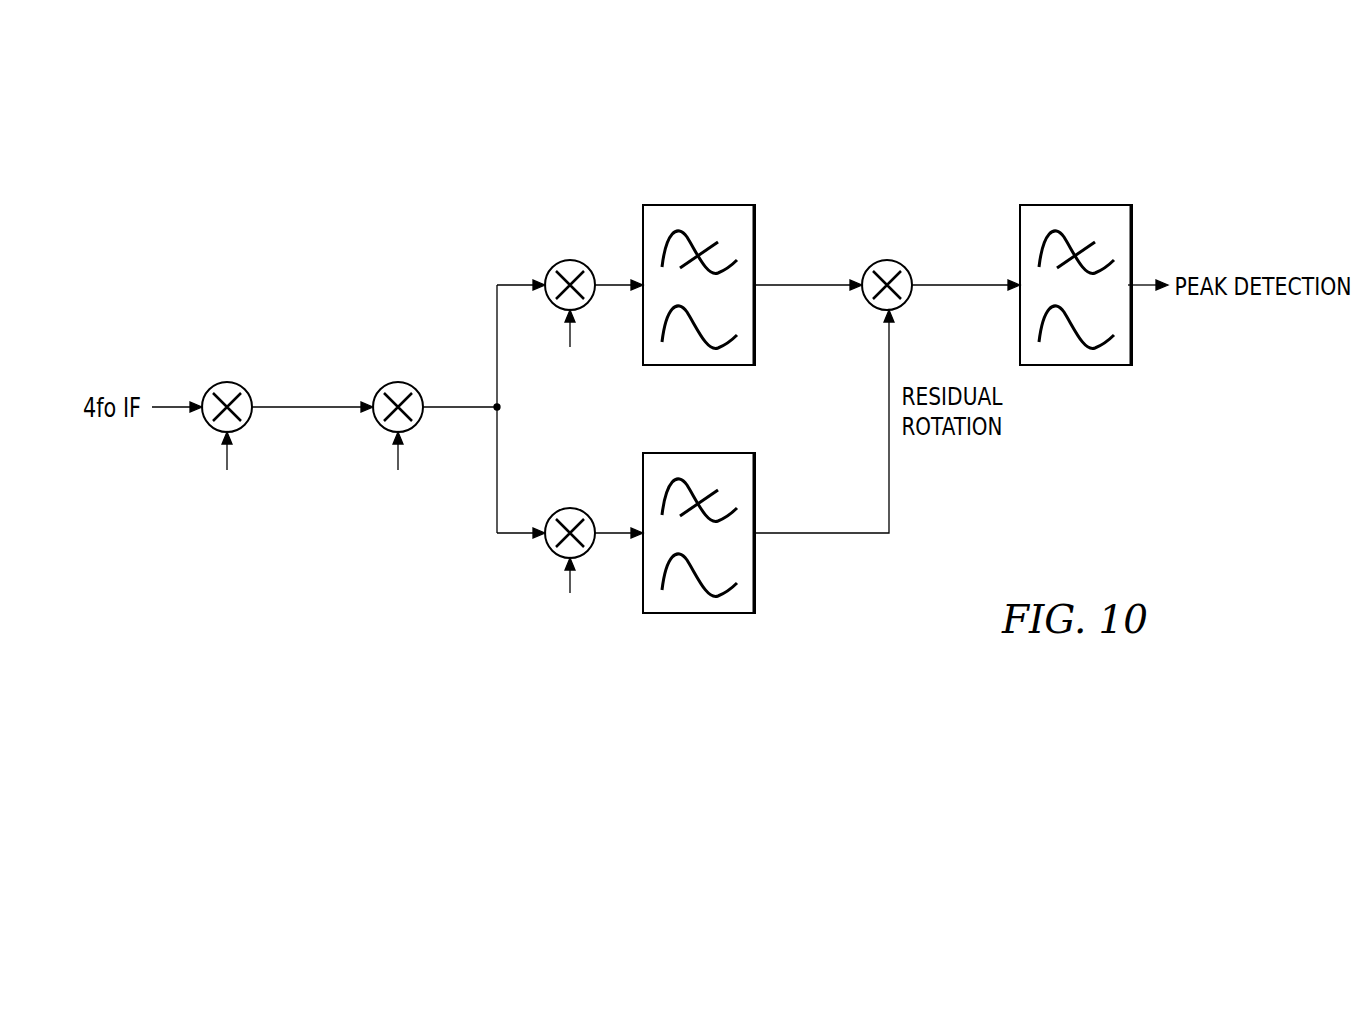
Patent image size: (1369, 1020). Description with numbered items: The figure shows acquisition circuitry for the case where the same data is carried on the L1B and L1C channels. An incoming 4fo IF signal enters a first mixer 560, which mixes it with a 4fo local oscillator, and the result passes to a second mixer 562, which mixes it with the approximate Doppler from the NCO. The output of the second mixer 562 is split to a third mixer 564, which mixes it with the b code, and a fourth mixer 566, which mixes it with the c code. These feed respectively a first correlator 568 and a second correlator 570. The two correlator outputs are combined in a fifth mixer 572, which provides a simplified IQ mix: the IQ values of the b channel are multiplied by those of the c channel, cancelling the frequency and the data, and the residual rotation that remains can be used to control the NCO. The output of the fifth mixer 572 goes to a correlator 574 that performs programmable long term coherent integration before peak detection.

The first mixer 560 is at (218, 385).
The second mixer 562 is at (389, 385).
The third mixer 564 is at (560, 263).
The fourth mixer 566 is at (560, 509).
The first correlator 568 is at (698, 205).
The second correlator 570 is at (700, 613).
The fifth mixer 572 is at (898, 261).
The correlator 574 is at (1088, 205).